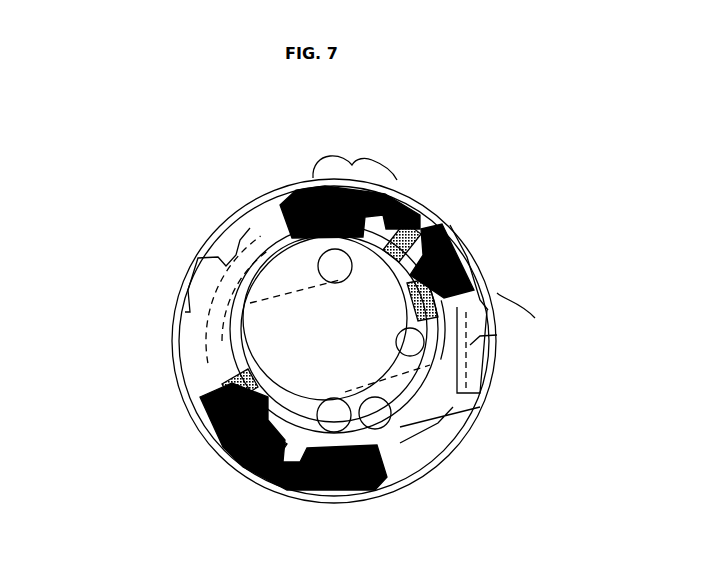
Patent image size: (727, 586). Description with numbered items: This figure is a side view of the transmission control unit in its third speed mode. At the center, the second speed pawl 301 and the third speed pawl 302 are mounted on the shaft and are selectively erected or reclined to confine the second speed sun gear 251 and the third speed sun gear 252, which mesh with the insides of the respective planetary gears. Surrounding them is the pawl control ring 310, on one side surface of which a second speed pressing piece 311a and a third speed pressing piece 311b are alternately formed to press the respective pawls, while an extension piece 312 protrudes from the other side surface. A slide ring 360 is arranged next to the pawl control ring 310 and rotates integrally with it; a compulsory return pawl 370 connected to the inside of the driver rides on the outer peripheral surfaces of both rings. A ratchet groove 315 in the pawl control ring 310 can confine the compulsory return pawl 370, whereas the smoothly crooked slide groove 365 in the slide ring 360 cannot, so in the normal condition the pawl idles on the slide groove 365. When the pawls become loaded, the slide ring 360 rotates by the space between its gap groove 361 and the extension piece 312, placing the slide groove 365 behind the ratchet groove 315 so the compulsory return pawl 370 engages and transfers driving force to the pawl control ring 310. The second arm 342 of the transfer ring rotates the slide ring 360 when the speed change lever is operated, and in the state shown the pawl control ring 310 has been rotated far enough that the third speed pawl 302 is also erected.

The second speed sun gear 251 is at (422, 391).
The third speed sun gear 252 is at (430, 470).
The second speed pawl 301 is at (425, 470).
The third speed pawl 302 is at (318, 246).
The pawl control ring 310 is at (478, 364).
The second speed pressing piece 311a is at (490, 393).
The third speed pressing piece 311b is at (215, 258).
The extension piece 312 is at (440, 262).
The ratchet groove 315 is at (482, 318).
The second arm 342 is at (497, 335).
The slide ring 360 is at (462, 222).
The gap groove 361 is at (278, 205).
The slide groove 365 is at (422, 205).
The compulsory return pawl 370 is at (265, 180).